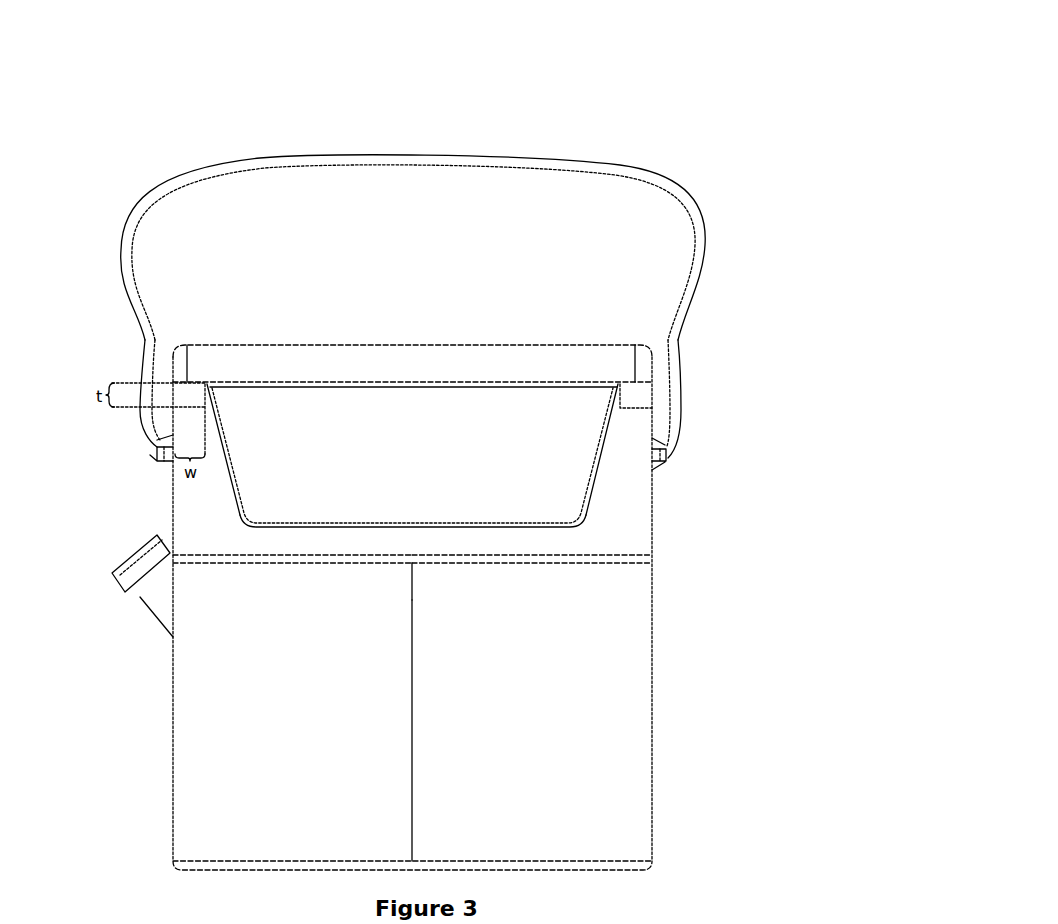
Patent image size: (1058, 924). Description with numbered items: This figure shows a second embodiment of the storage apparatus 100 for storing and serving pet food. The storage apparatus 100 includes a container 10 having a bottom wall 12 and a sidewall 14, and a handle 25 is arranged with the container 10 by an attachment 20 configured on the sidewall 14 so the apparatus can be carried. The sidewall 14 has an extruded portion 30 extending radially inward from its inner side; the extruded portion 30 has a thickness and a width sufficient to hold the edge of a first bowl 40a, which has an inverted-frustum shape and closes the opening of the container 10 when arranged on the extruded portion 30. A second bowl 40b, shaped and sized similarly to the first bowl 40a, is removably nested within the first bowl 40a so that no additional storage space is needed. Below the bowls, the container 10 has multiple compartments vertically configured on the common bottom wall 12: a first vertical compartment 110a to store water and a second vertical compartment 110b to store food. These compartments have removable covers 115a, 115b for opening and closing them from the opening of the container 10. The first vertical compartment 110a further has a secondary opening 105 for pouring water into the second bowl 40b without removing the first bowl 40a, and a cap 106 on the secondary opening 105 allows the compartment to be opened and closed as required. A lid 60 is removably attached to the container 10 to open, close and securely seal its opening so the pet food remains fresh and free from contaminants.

The storage apparatus 100 is at (531, 83).
The handle 25 is at (703, 266).
The attachment 20 is at (167, 468).
The lid 60 is at (652, 363).
The extruded portion 30 is at (632, 412).
The container 10 is at (215, 533).
The first bowl 40a is at (600, 462).
The second bowl 40b is at (585, 520).
The sidewall 14 is at (652, 690).
The bottom wall 12 is at (652, 865).
The removable cover 115a is at (203, 555).
The removable cover 115b is at (612, 565).
The first vertical compartment 110a is at (251, 733).
The second vertical compartment 110b is at (575, 673).
The cap 106 is at (118, 570).
The secondary opening 105 is at (140, 597).